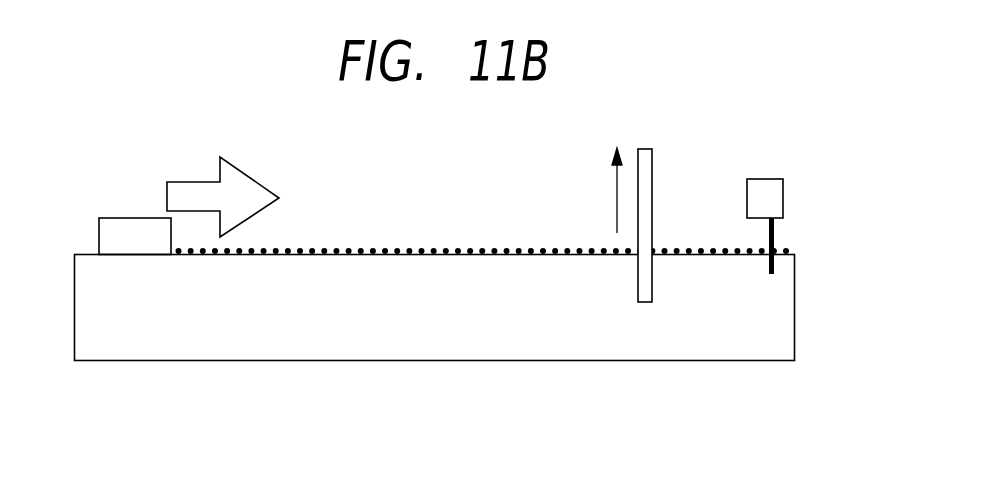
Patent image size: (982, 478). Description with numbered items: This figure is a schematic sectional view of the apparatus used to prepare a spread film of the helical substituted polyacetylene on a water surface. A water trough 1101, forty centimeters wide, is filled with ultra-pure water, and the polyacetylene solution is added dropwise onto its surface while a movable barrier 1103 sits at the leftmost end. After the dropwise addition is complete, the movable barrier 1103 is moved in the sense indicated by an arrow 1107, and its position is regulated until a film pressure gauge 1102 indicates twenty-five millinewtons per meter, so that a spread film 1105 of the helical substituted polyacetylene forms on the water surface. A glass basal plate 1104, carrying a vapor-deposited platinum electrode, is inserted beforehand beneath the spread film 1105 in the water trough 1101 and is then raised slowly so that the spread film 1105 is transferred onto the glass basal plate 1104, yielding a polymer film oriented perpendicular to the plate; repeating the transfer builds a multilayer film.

The water trough 1101 is at (734, 350).
The film pressure gauge 1102 is at (768, 188).
The movable barrier 1103 is at (136, 217).
The glass basal plate 1104 is at (645, 183).
The spread film 1105 is at (360, 253).
The arrow 1107 is at (255, 171).